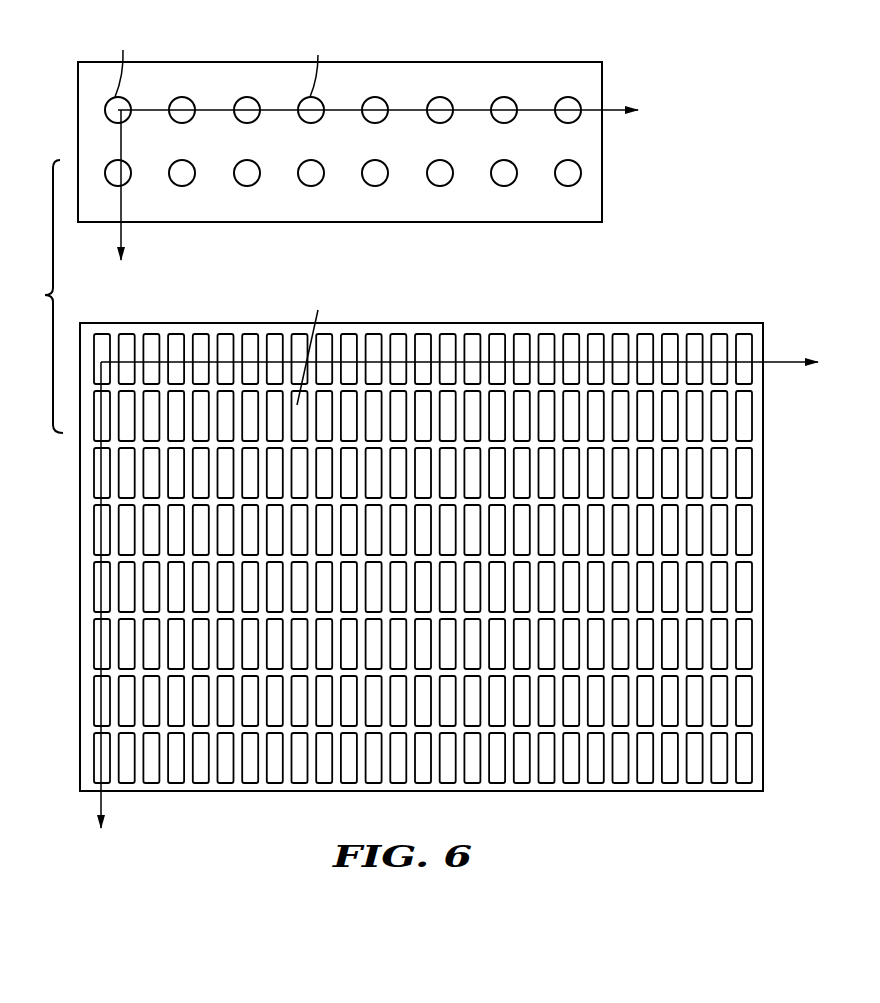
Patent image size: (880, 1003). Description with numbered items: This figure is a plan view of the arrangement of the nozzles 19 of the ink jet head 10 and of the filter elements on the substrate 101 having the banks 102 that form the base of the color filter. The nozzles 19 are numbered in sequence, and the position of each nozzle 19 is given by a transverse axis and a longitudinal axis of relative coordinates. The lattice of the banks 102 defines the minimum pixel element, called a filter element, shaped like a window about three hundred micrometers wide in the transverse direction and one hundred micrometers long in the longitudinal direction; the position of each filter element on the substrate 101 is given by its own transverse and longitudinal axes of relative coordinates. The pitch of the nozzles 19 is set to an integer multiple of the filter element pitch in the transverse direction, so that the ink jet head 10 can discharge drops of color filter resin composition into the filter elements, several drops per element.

The ink jet head 10 is at (375, 147).
The nozzles 19 is at (440, 97).
The substrate 101 is at (452, 559).
The banks 102 is at (700, 323).